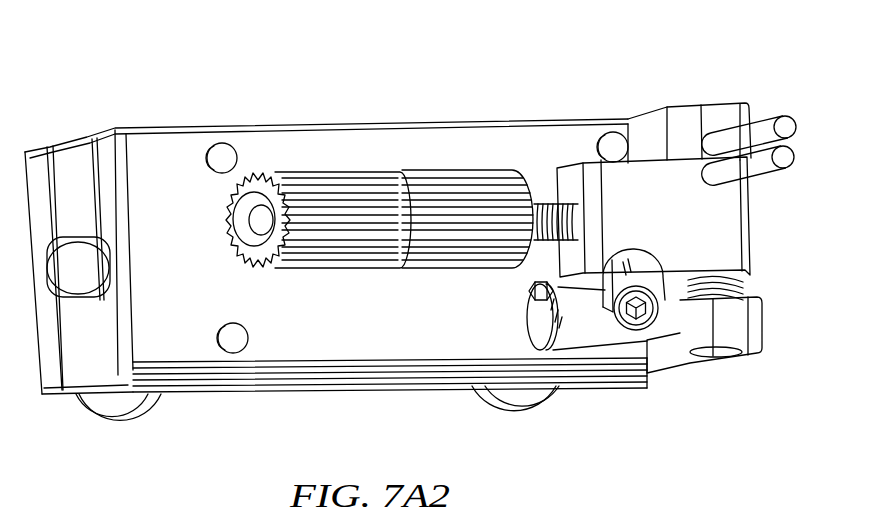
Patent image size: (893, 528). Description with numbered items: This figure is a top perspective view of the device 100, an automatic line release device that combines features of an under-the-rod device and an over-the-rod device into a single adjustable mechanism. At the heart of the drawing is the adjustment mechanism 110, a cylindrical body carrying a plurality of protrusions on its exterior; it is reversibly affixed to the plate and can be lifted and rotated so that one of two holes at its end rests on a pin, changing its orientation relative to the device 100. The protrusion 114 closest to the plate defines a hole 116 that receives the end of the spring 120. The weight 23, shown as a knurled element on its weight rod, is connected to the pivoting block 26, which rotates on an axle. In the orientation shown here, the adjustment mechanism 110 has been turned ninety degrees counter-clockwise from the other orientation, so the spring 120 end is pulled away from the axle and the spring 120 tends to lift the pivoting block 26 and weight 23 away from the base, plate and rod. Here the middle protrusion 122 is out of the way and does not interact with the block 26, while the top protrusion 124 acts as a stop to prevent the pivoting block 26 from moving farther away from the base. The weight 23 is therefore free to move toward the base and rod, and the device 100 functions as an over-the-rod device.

The device 100 is at (132, 108).
The weight 23 is at (365, 182).
The pivoting block 26 is at (627, 175).
The adjustment mechanism 110 is at (607, 347).
The protrusion 114 is at (540, 292).
The hole 116 is at (546, 283).
The spring 120 is at (737, 288).
The middle protrusion 122 is at (562, 339).
The top protrusion 124 is at (673, 287).